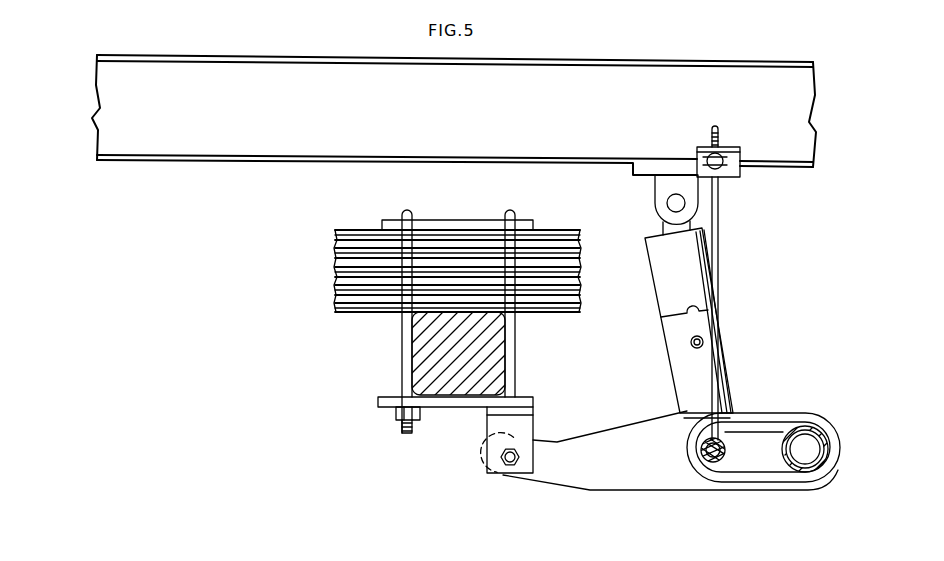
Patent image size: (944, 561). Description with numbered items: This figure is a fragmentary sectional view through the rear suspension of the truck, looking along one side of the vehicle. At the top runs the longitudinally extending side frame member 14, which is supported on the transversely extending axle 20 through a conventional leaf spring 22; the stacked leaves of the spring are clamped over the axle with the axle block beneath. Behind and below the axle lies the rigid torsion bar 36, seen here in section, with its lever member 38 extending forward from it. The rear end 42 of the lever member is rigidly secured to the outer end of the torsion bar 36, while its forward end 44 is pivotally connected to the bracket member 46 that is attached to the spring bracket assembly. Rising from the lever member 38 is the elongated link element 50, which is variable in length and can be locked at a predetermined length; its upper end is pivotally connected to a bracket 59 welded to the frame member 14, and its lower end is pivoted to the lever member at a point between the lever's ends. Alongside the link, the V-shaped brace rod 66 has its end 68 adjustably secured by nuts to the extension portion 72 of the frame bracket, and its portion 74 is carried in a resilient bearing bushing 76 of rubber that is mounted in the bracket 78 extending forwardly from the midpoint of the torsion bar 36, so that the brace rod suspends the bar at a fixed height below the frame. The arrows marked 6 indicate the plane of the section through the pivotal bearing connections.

The side frame member 14 is at (579, 77).
The section line 6- 6 is at (665, 135).
The axle 20 is at (432, 350).
The leaf spring 22 is at (365, 272).
The torsion bar 36 is at (830, 450).
The lever member 38 is at (613, 478).
The rear end of lever member 42 is at (828, 427).
The forward end of lever member 44 is at (540, 473).
The bracket member 46 is at (527, 428).
The link element 50 is at (737, 322).
The bracket 59 is at (660, 192).
The brace rod 66 is at (719, 206).
The end of brace rod 68 is at (720, 138).
The extension portion of bracket 72 is at (742, 158).
The portion of brace rod 74 is at (702, 446).
The bearing bushing 76 is at (702, 455).
The bracket 78 is at (755, 448).